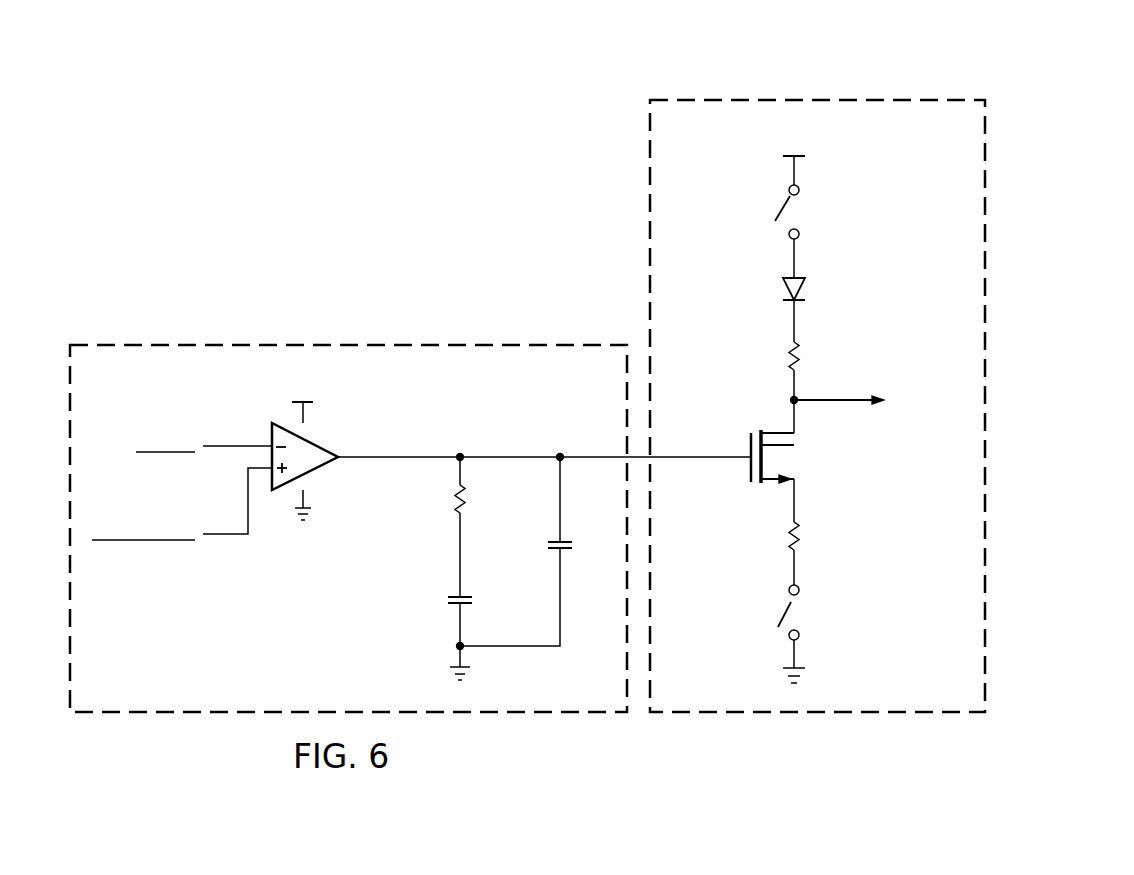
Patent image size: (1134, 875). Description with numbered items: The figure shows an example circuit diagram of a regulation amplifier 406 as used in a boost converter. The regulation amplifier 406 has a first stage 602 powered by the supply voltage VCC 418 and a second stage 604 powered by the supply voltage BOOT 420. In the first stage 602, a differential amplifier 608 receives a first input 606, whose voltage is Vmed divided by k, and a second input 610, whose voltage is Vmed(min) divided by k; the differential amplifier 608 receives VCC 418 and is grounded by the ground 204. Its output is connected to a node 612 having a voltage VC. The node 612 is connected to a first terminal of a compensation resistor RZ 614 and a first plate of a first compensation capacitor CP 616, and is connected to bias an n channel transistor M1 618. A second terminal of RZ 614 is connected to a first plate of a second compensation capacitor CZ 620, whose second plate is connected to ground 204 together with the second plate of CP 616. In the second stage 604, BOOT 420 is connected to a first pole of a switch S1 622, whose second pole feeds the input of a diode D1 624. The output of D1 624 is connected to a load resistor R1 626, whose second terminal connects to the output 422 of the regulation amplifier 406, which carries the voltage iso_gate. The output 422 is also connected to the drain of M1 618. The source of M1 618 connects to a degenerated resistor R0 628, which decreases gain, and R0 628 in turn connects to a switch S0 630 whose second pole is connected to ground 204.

The regulation amplifier 406 is at (294, 132).
The first stage 602 is at (265, 338).
The second stage 604 is at (879, 93).
The first input 606 is at (236, 445).
The differential amplifier 608 is at (322, 470).
The second input 610 is at (223, 536).
The node 612 is at (466, 453).
The compensation resistor RZ 614 is at (455, 498).
The first compensation capacitor CP 616 is at (547, 548).
The n channel transistor M1 618 is at (747, 473).
The second compensation capacitor CZ 620 is at (448, 600).
The switch S1 622 is at (783, 206).
The diode D1 624 is at (785, 293).
The load resistor R1 626 is at (788, 353).
The degenerated resistor R0 628 is at (788, 532).
The switch S0 630 is at (783, 608).
The supply voltage VCC 418 is at (313, 404).
The supply voltage BOOT 420 is at (805, 158).
The output 422 is at (855, 405).
The ground 204 is at (807, 677).